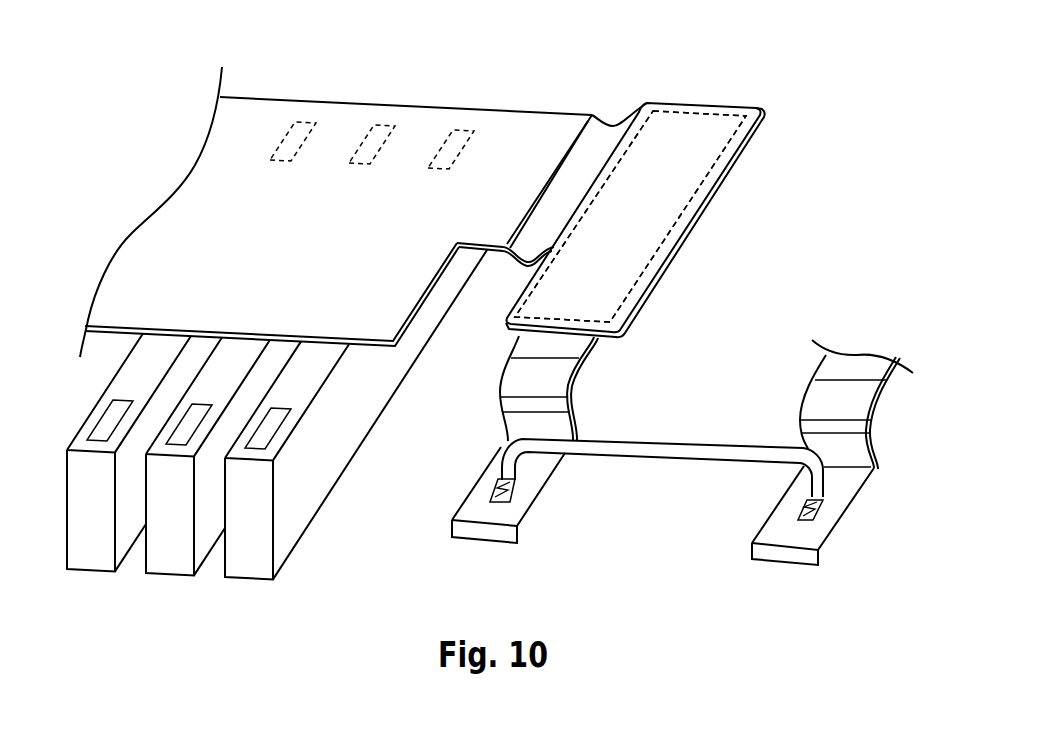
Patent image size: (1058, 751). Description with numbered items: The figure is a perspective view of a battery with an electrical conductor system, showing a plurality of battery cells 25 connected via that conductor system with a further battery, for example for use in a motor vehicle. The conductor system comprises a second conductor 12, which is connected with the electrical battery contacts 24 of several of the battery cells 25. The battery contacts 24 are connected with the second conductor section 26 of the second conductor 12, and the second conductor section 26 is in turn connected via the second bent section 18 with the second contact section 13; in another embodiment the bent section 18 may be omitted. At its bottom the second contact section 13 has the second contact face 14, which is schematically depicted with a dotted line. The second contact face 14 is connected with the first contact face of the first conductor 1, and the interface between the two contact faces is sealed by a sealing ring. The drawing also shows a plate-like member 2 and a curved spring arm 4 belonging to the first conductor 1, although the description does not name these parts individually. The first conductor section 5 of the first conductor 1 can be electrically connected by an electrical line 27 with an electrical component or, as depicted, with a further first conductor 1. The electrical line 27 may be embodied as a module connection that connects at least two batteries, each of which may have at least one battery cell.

The first conductor 1 is at (835, 490).
The contact plate 2 is at (683, 233).
The spring arm 4 is at (582, 355).
The first conductor section 5 is at (485, 489).
The second conductor 12 is at (268, 76).
The second contact section 13 is at (675, 127).
The second contact face 14 is at (677, 187).
The second bent section 18 is at (612, 138).
The electrical battery contacts 24 is at (287, 156).
The battery cells 25 is at (95, 550).
The second conductor section 26 is at (512, 122).
The electrical line 27 is at (693, 452).